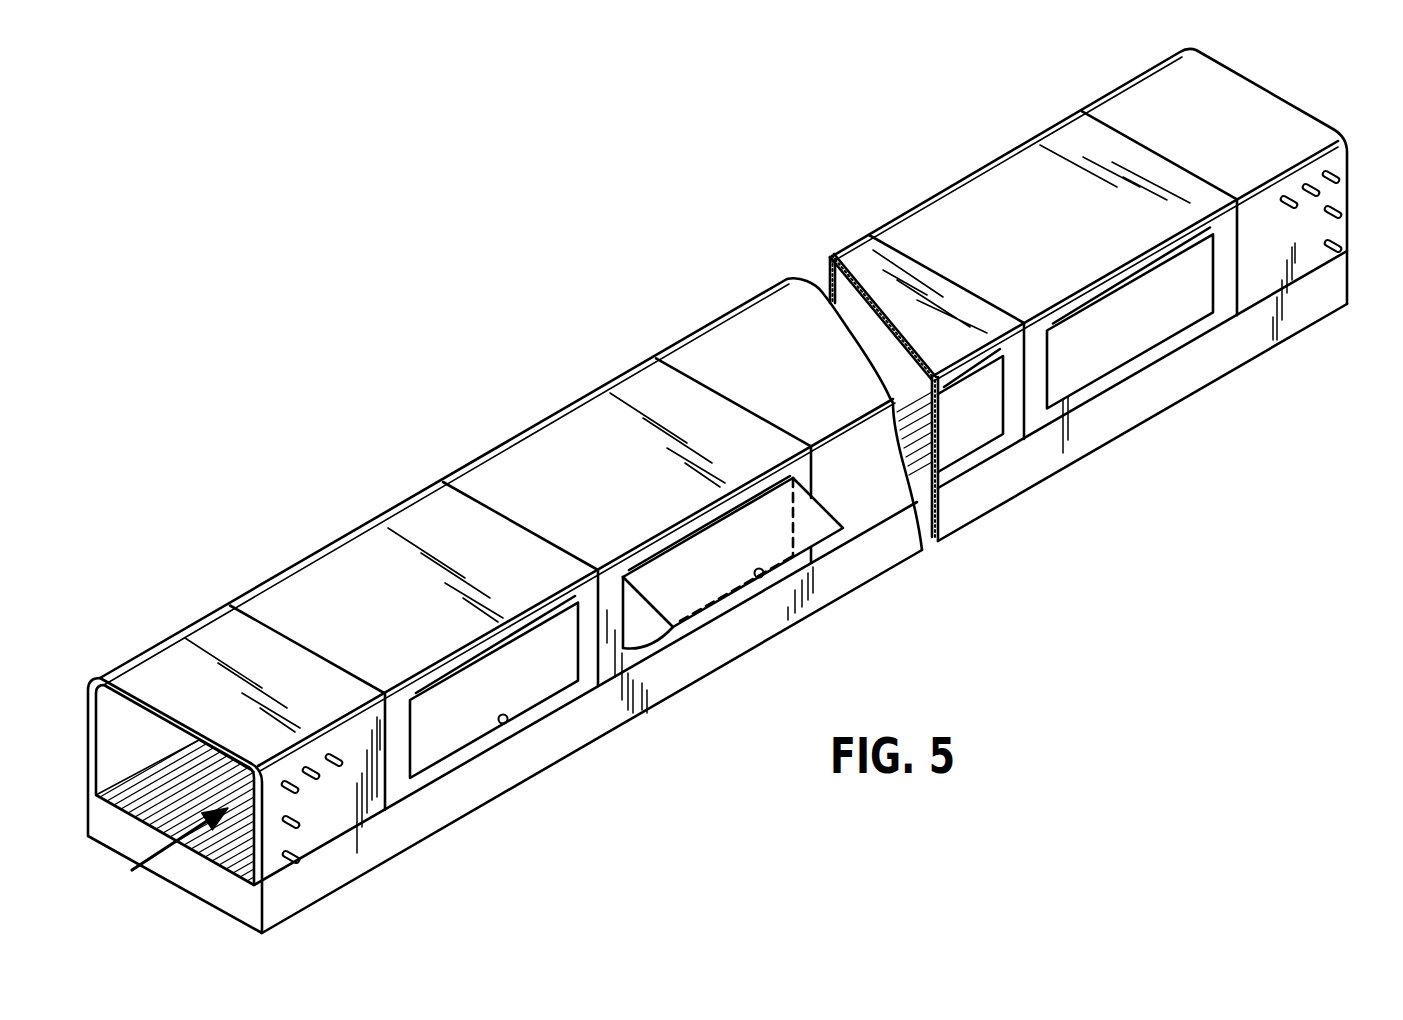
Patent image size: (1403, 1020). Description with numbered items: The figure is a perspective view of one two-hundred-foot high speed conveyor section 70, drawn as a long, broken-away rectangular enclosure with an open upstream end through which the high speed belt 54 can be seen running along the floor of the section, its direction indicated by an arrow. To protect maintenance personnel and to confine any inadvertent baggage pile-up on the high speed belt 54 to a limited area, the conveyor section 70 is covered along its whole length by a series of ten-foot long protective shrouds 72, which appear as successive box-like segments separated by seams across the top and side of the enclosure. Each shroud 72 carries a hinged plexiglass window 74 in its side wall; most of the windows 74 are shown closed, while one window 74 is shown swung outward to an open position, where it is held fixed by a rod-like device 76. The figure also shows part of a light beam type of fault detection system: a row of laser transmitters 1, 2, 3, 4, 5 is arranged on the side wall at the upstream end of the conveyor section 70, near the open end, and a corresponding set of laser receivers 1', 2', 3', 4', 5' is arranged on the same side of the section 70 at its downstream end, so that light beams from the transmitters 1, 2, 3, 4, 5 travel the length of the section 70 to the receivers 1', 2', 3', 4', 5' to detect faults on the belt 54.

The high speed conveyor section 70 is at (560, 384).
The protective shroud 72 is at (307, 570).
The hinged plexiglass window 74 is at (557, 675).
The rod-like device 76 is at (656, 645).
The high speed belt 54 is at (142, 811).
The laser transmitter 1 is at (278, 751).
The laser transmitter 2 is at (305, 743).
The laser transmitter 3 is at (337, 737).
The laser transmitter 4 is at (319, 809).
The laser transmitter 5 is at (319, 868).
The laser receiver 1' is at (1257, 172).
The laser receiver 2' is at (1281, 161).
The laser receiver 3' is at (1310, 149).
The laser receiver 4' is at (1363, 200).
The laser receiver 5' is at (1363, 257).